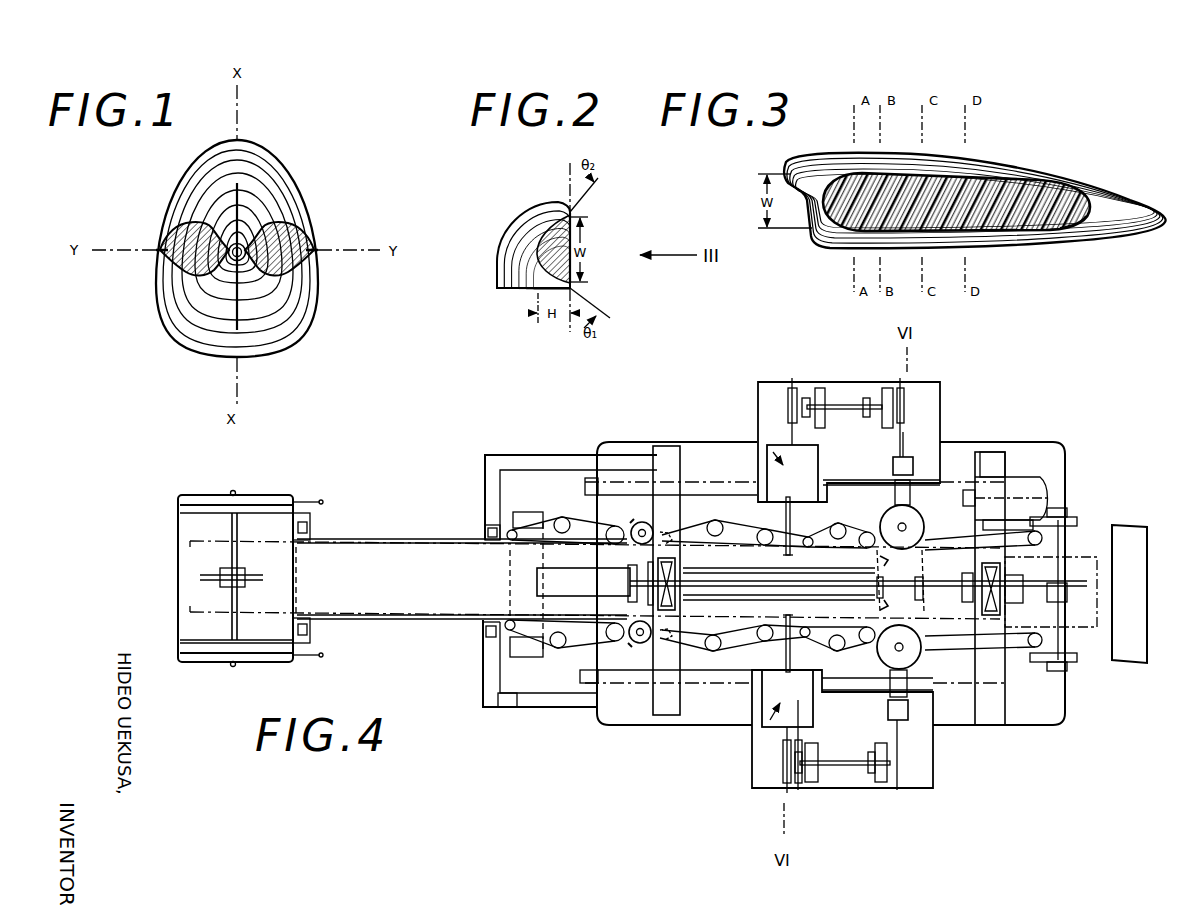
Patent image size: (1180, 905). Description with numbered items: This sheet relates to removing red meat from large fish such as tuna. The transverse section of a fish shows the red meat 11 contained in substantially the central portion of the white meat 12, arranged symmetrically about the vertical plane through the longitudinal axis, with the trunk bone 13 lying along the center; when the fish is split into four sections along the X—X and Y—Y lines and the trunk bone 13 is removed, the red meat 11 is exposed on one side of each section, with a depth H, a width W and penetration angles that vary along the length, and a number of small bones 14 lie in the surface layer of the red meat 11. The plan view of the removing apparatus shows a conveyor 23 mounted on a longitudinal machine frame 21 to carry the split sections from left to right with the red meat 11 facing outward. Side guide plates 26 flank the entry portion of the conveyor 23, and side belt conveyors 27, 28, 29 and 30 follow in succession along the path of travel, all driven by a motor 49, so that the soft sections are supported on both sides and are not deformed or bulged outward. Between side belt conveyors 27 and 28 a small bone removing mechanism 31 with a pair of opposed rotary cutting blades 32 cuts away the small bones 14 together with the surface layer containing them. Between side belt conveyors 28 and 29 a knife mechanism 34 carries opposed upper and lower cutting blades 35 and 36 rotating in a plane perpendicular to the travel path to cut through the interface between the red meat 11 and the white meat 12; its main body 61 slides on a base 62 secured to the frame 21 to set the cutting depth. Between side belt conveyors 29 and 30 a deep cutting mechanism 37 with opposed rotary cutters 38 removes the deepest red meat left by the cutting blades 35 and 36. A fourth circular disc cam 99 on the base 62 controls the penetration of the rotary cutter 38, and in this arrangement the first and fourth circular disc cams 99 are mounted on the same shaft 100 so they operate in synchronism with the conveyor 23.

In FIG. 1, the red meat 11 is at (185, 233).
In FIG. 2, the red meat 11 is at (556, 213).
In FIG. 3, the red meat 11 is at (1027, 188).
In FIG. 1, the white meat 12 is at (295, 300).
In FIG. 2, the white meat 12 is at (520, 230).
In FIG. 3, the white meat 12 is at (1110, 193).
In FIG. 1, the crack 13 is at (240, 205).
In FIG. 2, the small bones 14 is at (580, 222).
In FIG. 3, the small bones 14 is at (1032, 238).
In FIG. 4, the machine frame 21 is at (517, 700).
In FIG. 4, the conveyor 23 is at (352, 543).
In FIG. 4, the side guide plates 26 is at (432, 537).
In FIG. 4, the side belt conveyor 27 is at (530, 512).
In FIG. 4, the side belt conveyor 28 is at (702, 522).
In FIG. 4, the side belt conveyor 29 is at (857, 512).
In FIG. 4, the side belt conveyor 30 is at (922, 510).
In FIG. 4, the small bone removing mechanism 31 is at (640, 519).
In FIG. 4, the rotary cutting blades 32 is at (637, 523).
In FIG. 4, the knife mechanism 34 is at (783, 455).
In FIG. 4, the cutting blade 35 is at (752, 520).
In FIG. 4, the cutting blade 36 is at (754, 513).
In FIG. 4, the deep cutting mechanism 37 is at (914, 456).
In FIG. 4, the rotary cutter 38 is at (908, 560).
In FIG. 4, the motor 49 is at (1015, 483).
In FIG. 4, the main body 61 is at (778, 450).
In FIG. 4, the base 62 is at (860, 382).
In FIG. 4, the fourth circular disc cam 99 is at (789, 390).
In FIG. 4, the shaft 100 is at (838, 405).